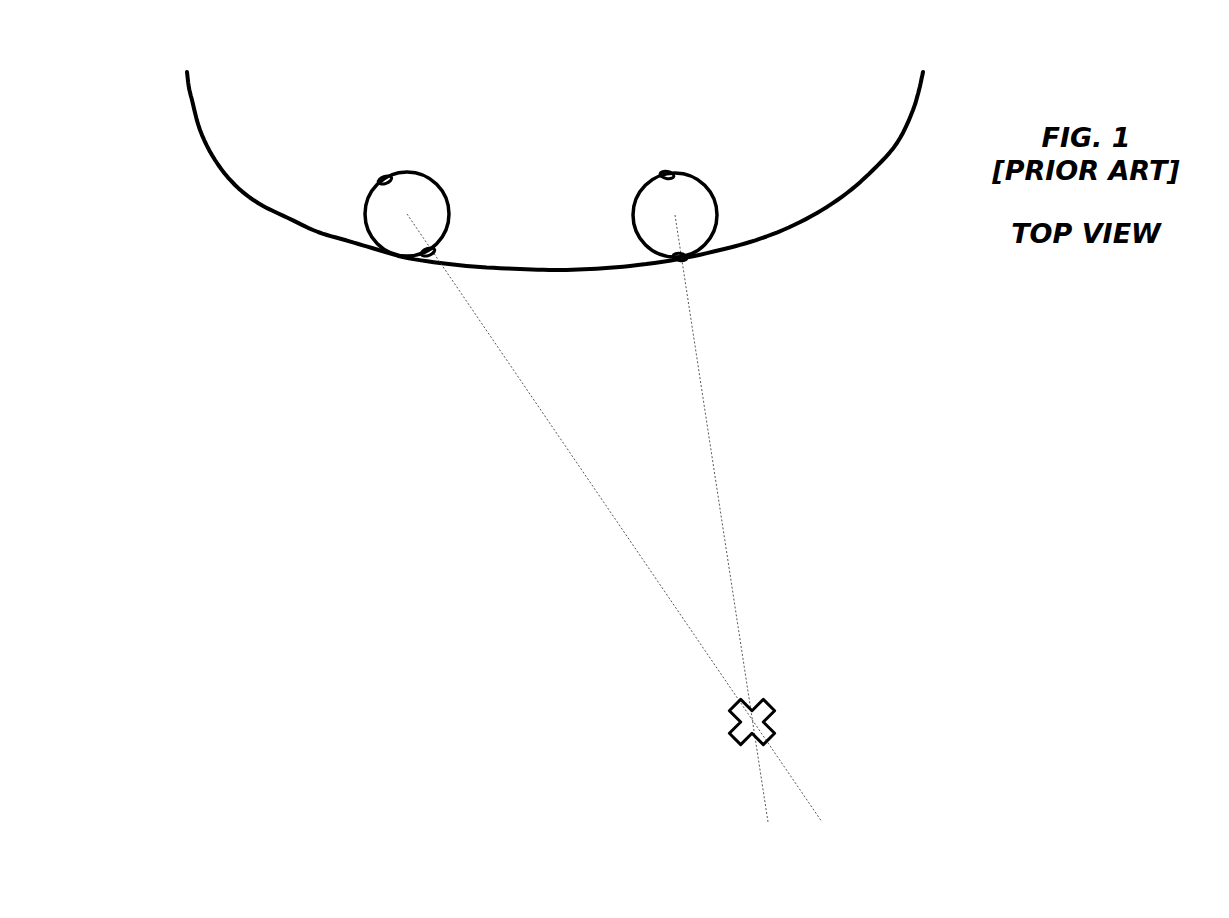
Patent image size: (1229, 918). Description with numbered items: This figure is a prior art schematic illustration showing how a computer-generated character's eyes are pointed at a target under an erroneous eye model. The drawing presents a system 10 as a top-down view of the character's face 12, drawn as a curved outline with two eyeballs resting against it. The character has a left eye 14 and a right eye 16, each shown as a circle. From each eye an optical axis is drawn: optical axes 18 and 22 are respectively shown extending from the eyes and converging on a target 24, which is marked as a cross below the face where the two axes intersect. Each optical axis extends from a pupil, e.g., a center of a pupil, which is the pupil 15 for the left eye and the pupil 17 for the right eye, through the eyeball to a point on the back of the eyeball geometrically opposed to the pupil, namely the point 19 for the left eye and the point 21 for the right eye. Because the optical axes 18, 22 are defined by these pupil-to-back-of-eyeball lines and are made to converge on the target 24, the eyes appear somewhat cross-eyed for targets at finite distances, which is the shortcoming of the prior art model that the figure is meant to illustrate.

The system 10 is at (470, 50).
The character's face 12 is at (210, 112).
The left eye 14 is at (436, 184).
The pupil 15 is at (438, 258).
The right eye 16 is at (713, 193).
The pupil 17 is at (688, 258).
The optical axis 18 is at (533, 393).
The point on the back of the eyeball 19 is at (390, 172).
The point on the back of the eyeball 21 is at (665, 170).
The optical axis 22 is at (702, 393).
The target 24 is at (774, 703).